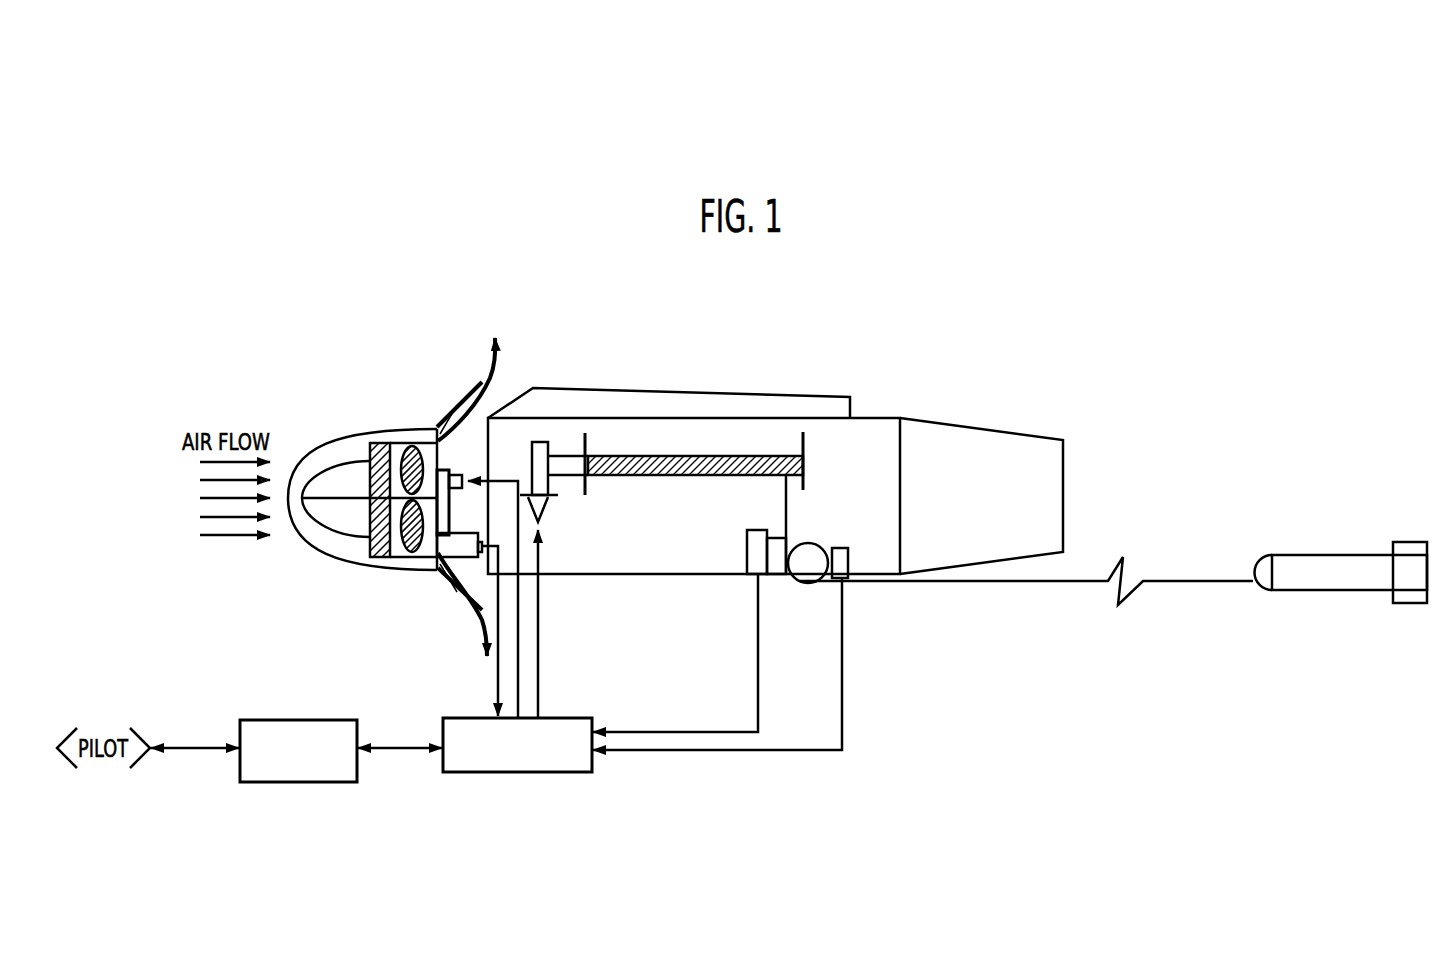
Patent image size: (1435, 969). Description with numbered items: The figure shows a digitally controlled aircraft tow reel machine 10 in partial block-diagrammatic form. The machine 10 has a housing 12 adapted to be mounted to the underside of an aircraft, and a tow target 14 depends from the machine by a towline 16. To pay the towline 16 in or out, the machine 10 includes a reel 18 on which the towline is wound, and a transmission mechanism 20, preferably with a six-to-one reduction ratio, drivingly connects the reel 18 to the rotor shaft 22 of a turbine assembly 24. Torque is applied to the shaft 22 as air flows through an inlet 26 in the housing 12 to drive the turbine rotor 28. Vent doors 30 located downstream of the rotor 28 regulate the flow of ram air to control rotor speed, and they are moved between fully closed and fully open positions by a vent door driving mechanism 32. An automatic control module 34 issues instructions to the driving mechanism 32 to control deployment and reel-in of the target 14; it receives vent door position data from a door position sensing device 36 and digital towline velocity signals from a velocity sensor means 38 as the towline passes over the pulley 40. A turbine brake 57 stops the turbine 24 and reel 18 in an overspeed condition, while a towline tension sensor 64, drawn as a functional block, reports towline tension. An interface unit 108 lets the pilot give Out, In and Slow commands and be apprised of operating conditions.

The tow reel machine 10 is at (775, 452).
The housing 12 is at (880, 416).
The tow target 14 is at (1302, 556).
The towline 16 is at (1012, 582).
The reel 18 is at (676, 475).
The transmission mechanism 20 is at (543, 444).
The rotor shaft 22 is at (558, 497).
The turbine assembly 24 is at (376, 439).
The inlet 26 is at (310, 560).
The turbine rotor 28 is at (417, 562).
The vent doors 30 is at (466, 397).
The vent door driving mechanism 32 is at (465, 473).
The automatic control module 34 is at (565, 718).
The door position sensing device 36 is at (472, 557).
The digital velocity sensor means 38 is at (848, 566).
The pulley 40 is at (811, 584).
The turbine brake 57 is at (541, 522).
The towline tension sensor 64 is at (746, 563).
The interface unit 108 is at (300, 718).